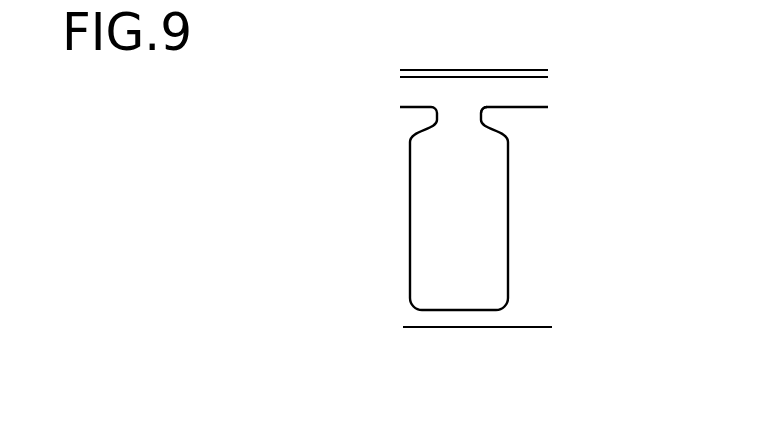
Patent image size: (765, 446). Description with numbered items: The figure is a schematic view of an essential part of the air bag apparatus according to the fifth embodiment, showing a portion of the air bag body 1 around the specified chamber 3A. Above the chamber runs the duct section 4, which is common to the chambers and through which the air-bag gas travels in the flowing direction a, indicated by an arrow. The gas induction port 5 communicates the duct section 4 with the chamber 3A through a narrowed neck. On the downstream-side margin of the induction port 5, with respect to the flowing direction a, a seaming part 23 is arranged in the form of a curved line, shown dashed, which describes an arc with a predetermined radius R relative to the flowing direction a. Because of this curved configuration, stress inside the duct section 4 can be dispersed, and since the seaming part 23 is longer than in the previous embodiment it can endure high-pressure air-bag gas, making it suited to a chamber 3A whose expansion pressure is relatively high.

The air bag body 1 is at (440, 328).
The specified chamber 3A is at (482, 257).
The duct section 4 is at (492, 82).
The gas induction port 5 is at (482, 107).
The seaming part 23 is at (435, 107).
The radius R is at (452, 83).
The flowing direction a is at (537, 90).